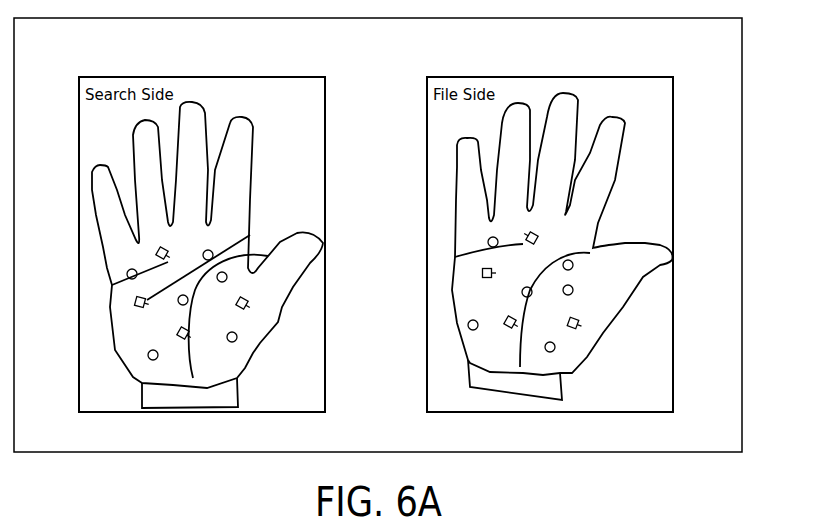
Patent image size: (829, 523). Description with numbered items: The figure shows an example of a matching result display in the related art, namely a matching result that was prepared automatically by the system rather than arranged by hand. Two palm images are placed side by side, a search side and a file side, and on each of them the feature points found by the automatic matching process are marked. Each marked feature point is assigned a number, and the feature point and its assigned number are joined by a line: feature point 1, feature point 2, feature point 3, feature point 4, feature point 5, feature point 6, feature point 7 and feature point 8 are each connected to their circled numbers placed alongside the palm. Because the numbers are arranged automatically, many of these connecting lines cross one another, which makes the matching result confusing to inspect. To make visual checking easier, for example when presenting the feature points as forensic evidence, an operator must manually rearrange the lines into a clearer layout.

The feature point 1 is at (212, 253).
The feature point 2 is at (137, 273).
The feature point 3 is at (188, 330).
The feature point 4 is at (188, 300).
The feature point 5 is at (227, 279).
The feature point 6 is at (158, 355).
The feature point 7 is at (236, 339).
The feature point 8 is at (166, 257).